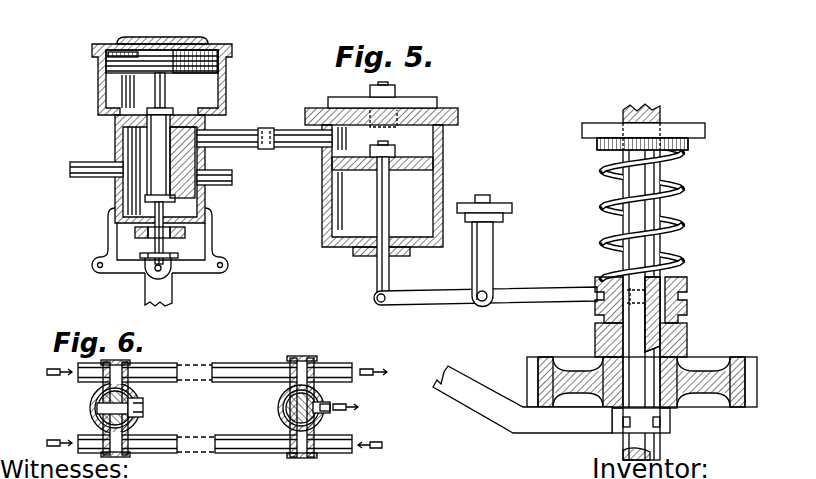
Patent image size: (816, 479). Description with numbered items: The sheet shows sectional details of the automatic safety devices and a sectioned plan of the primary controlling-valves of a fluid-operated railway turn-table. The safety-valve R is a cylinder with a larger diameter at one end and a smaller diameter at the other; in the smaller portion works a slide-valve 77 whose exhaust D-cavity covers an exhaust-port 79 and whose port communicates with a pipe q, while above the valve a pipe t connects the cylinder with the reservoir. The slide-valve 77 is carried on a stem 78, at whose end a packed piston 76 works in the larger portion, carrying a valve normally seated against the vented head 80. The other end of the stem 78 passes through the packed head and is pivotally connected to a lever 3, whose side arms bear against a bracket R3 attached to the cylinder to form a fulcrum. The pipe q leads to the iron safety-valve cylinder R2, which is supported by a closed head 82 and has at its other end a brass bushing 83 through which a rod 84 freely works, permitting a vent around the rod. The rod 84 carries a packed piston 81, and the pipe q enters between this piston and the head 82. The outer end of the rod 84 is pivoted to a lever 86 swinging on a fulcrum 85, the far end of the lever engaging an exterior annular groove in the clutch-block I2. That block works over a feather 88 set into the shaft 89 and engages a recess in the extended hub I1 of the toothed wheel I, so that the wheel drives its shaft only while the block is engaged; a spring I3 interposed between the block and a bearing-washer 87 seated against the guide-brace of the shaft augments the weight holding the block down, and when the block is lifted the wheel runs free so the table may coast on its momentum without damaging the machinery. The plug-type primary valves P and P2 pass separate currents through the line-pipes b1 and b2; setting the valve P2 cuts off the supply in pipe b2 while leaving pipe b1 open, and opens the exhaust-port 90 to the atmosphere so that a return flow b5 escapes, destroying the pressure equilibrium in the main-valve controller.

In FIG. 5, the head 80 is at (163, 38).
In FIG. 5, the packed piston 76 is at (197, 73).
In FIG. 5, the stem 78 is at (155, 92).
In FIG. 5, the safety-valve R is at (115, 137).
In FIG. 5, the slide-valve 77 is at (171, 189).
In FIG. 5, the pipe t is at (85, 180).
In FIG. 5, the exhaust-port 79 is at (228, 185).
In FIG. 5, the bracket R3 is at (212, 231).
In FIG. 5, the lever 3 is at (173, 285).
In FIG. 5, the safety-valve cylinder R2 is at (323, 225).
In FIG. 5, the closed head 82 is at (447, 112).
In FIG. 5, the packed piston 81 is at (417, 173).
In FIG. 5, the bushing 83 is at (360, 257).
In FIG. 5, the rod 84 is at (392, 270).
In FIG. 5, the pipe q is at (288, 138).
In FIG. 5, the lever 86 is at (457, 303).
In FIG. 5, the fulcrum 85 is at (494, 240).
In FIG. 5, the spring I3 is at (676, 230).
In FIG. 5, the shaft 89 is at (630, 223).
In FIG. 5, the bearing-washer 87 is at (690, 145).
In FIG. 5, the feather 88 is at (667, 275).
In FIG. 5, the clutch-block I2 is at (688, 304).
In FIG. 5, the extended hub I1 is at (687, 334).
In FIG. 5, the toothed wheel I is at (533, 367).
In FIG. 6, the pipe b1 is at (238, 366).
In FIG. 6, the pipe b2 is at (223, 436).
In FIG. 6, the primary valve P is at (97, 408).
In FIG. 6, the primary valve P2 is at (283, 413).
In FIG. 6, the exhaust-port 90 is at (145, 410).
In FIG. 6, the return flow b5 is at (350, 447).